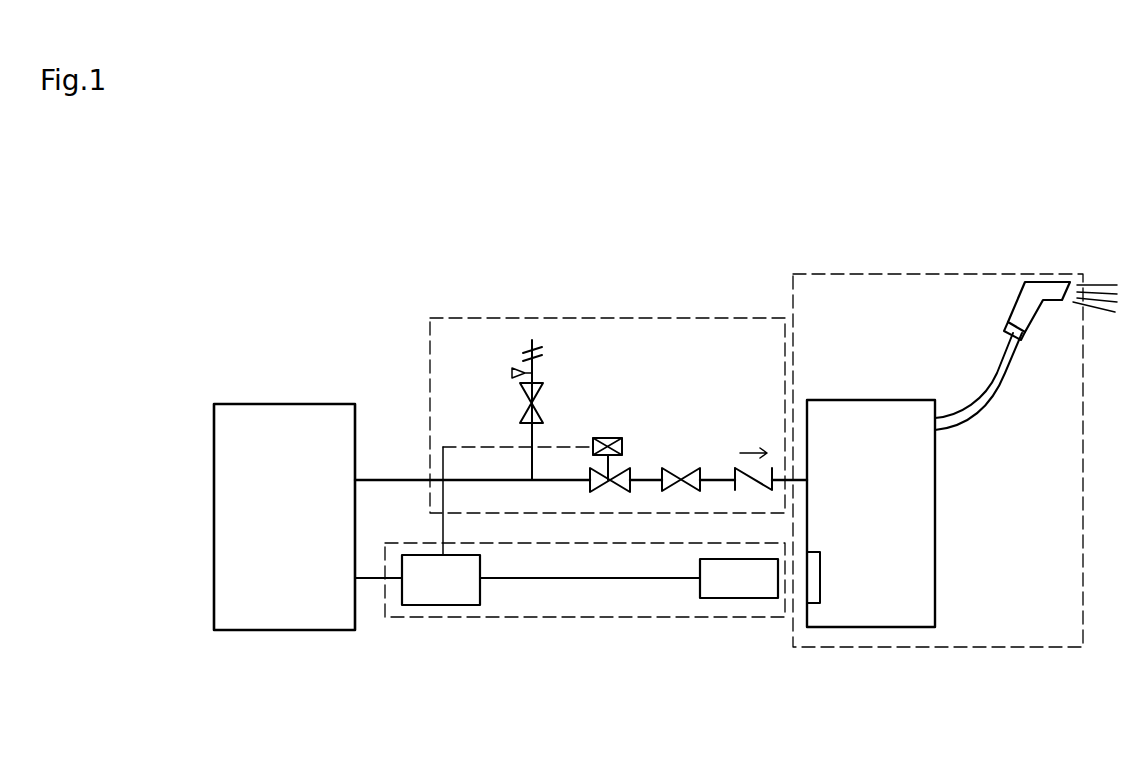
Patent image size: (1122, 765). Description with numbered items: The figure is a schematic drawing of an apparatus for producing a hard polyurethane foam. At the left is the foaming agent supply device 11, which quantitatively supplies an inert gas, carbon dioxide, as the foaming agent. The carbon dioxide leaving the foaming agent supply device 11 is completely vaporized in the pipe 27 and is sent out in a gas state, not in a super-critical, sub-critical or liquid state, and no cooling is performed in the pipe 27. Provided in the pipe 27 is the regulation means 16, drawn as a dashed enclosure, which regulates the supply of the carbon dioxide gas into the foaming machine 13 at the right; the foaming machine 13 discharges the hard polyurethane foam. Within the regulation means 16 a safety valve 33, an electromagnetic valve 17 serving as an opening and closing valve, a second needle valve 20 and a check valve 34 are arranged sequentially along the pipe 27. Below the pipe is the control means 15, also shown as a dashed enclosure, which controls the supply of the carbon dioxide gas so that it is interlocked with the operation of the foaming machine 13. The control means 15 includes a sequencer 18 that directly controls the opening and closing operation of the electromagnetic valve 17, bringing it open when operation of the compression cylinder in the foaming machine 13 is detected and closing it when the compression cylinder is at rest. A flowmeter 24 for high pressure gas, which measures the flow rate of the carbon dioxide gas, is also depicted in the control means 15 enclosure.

The foaming agent supply device 11 is at (290, 403).
The foaming machine 13 is at (958, 274).
The control means 15 is at (608, 617).
The regulation means 16 is at (645, 318).
The electromagnetic valve 17 is at (612, 438).
The sequencer 18 is at (460, 605).
The second needle valve 20 is at (690, 468).
The flowmeter 24 is at (735, 598).
The pipe 27 is at (388, 480).
The safety valve 33 is at (535, 378).
The check valve 34 is at (770, 468).